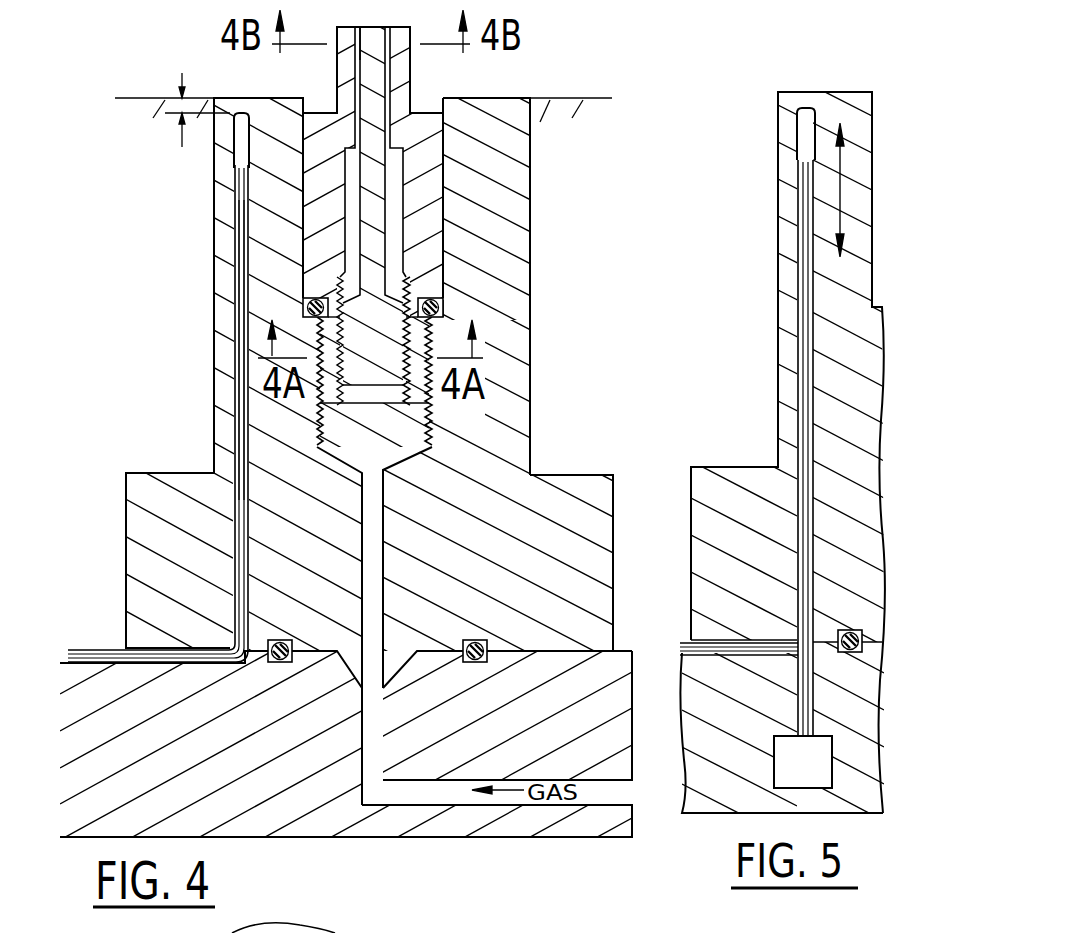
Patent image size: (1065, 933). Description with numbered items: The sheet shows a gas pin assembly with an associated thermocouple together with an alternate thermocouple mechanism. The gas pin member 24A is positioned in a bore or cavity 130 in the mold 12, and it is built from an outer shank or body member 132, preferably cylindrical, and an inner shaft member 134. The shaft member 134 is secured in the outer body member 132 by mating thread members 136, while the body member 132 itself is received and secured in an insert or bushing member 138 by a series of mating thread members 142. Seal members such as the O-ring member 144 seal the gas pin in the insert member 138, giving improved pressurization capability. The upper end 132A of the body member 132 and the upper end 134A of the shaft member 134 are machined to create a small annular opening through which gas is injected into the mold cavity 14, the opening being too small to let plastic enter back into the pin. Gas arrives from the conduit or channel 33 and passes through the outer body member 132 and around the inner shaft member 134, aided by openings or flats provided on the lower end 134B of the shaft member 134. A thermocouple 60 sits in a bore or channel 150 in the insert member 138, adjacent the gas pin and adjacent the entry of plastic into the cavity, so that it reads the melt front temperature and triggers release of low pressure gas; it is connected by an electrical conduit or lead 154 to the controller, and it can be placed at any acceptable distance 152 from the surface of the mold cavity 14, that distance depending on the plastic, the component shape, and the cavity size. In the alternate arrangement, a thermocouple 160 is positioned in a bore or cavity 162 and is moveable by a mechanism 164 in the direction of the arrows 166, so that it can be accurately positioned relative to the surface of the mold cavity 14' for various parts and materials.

In FIG. 4, the mold 12 is at (182, 241).
In FIG. 4, the mold cavity 14 is at (363, 93).
In FIG. 4, the distance 152 is at (181, 132).
In FIG. 4, the thermocouple 60 is at (240, 133).
In FIG. 4, the bore or channel 150 is at (243, 432).
In FIG. 4, the electrical conduit or lead 154 is at (240, 365).
In FIG. 4, the outer body member 132 is at (415, 182).
In FIG. 4, the upper end of body member 132A is at (345, 48).
In FIG. 4, the gas pin member 24A is at (420, 213).
In FIG. 4, the bore or cavity 130 is at (440, 155).
In FIG. 4, the inner shaft member 134 is at (385, 248).
In FIG. 4, the upper end of shaft member 134A is at (382, 40).
In FIG. 4, the lower end of shaft member 134B is at (378, 387).
In FIG. 4, the mating thread members 136 is at (435, 312).
In FIG. 4, the mating thread members 142 is at (433, 405).
In FIG. 4, the O-ring member 144 is at (443, 300).
In FIG. 4, the insert or bushing member 138 is at (525, 445).
In FIG. 4, the conduit or channel 33 is at (413, 796).
In FIG. 5, the surface of the mold cavity 14' is at (788, 436).
In FIG. 5, the thermocouple 160 is at (803, 130).
In FIG. 5, the bore or cavity 162 is at (813, 270).
In FIG. 5, the mechanism 164 is at (782, 758).
In FIG. 5, the arrows 166 is at (840, 202).